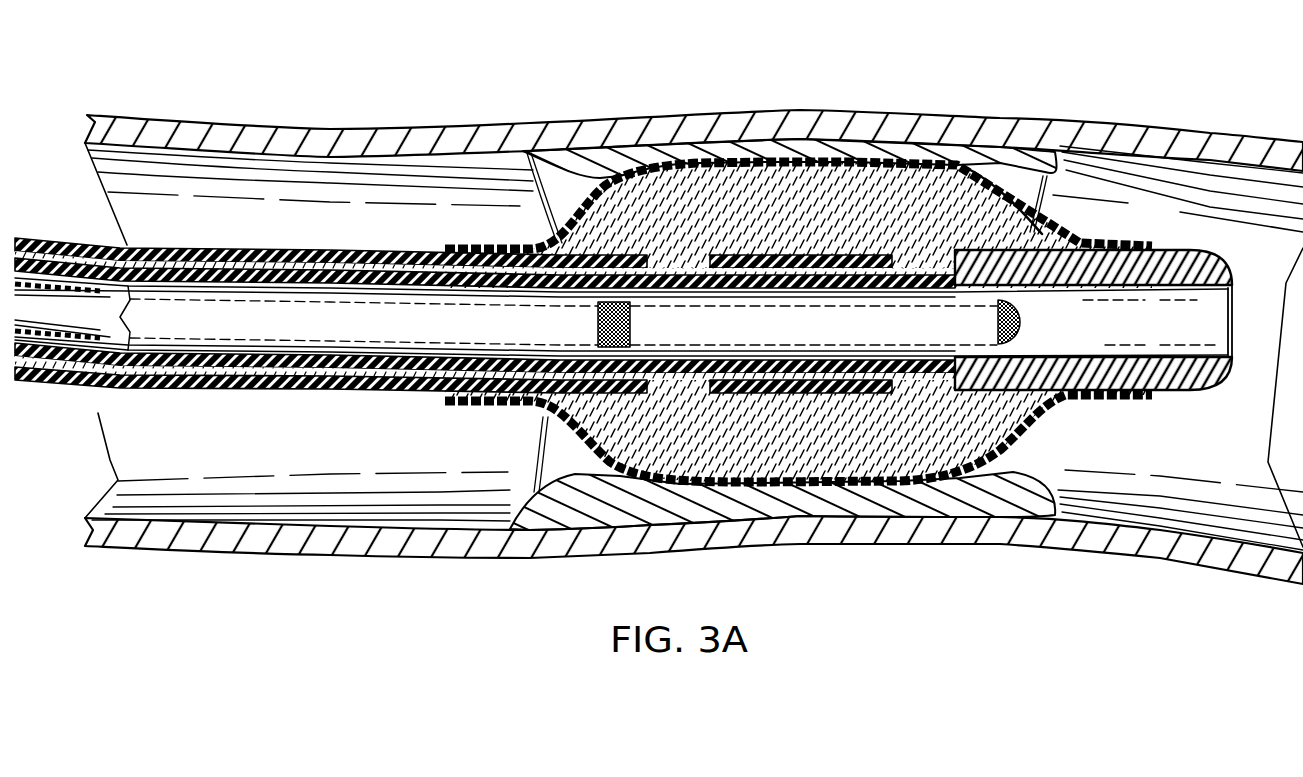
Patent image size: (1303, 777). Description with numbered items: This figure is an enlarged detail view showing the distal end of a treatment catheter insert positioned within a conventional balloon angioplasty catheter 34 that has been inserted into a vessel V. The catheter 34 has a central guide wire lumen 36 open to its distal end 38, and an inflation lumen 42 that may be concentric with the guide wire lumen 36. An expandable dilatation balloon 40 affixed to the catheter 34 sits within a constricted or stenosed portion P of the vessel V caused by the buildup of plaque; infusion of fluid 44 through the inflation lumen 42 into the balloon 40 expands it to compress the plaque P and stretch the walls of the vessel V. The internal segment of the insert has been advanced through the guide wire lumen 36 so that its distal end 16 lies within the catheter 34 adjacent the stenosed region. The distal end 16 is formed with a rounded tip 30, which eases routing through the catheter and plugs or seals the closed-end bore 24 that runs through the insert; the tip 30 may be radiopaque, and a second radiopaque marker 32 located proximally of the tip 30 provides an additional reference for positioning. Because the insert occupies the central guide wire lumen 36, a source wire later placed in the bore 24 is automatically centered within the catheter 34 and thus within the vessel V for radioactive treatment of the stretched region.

The distal end 16 is at (308, 330).
The bore 24 is at (63, 388).
The rounded tip 30 is at (1022, 323).
The radiopaque marker 32 is at (632, 328).
The balloon angioplasty catheter 34 is at (72, 230).
The guide wire lumen 36 is at (196, 350).
The distal end 38 is at (1218, 313).
The dilatation balloon 40 is at (577, 440).
The inflation lumen 42 is at (110, 387).
The fluid 44 is at (807, 190).
The stenosed portion P is at (600, 157).
The vessel V is at (1077, 122).